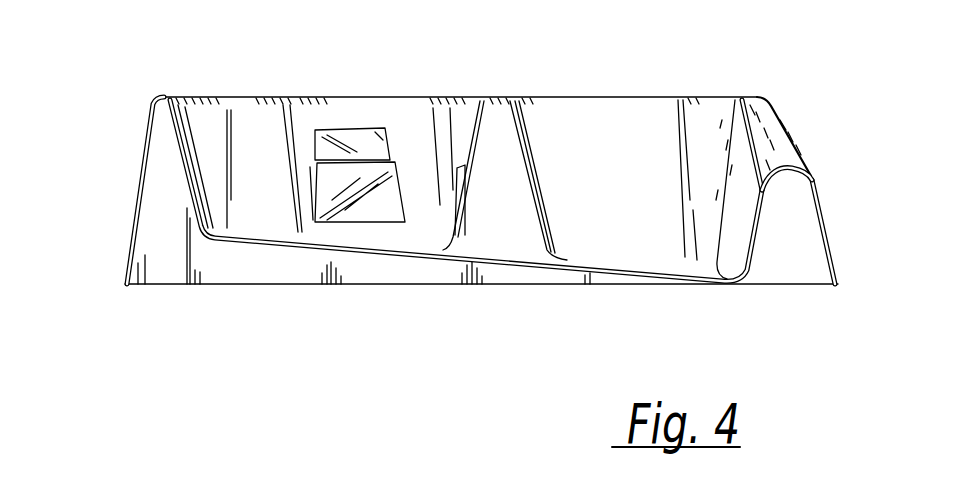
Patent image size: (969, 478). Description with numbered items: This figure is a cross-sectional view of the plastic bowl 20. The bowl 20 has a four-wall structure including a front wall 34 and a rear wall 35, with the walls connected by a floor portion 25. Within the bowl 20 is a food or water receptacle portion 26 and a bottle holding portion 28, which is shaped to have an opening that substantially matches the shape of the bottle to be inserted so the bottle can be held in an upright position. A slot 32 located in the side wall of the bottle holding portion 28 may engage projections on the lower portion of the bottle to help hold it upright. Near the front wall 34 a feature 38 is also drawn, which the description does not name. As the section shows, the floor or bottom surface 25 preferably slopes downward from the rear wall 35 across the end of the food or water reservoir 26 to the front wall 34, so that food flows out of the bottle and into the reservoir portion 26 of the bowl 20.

The bowl 20 is at (122, 130).
The floor portion 25 is at (503, 263).
The food or water receptacle portion 26 is at (648, 204).
The bottle holding portion 28 is at (275, 196).
The slot 32 is at (348, 132).
The front wall 34 is at (827, 228).
The rear wall 35 is at (136, 228).
The bead 38 is at (803, 163).